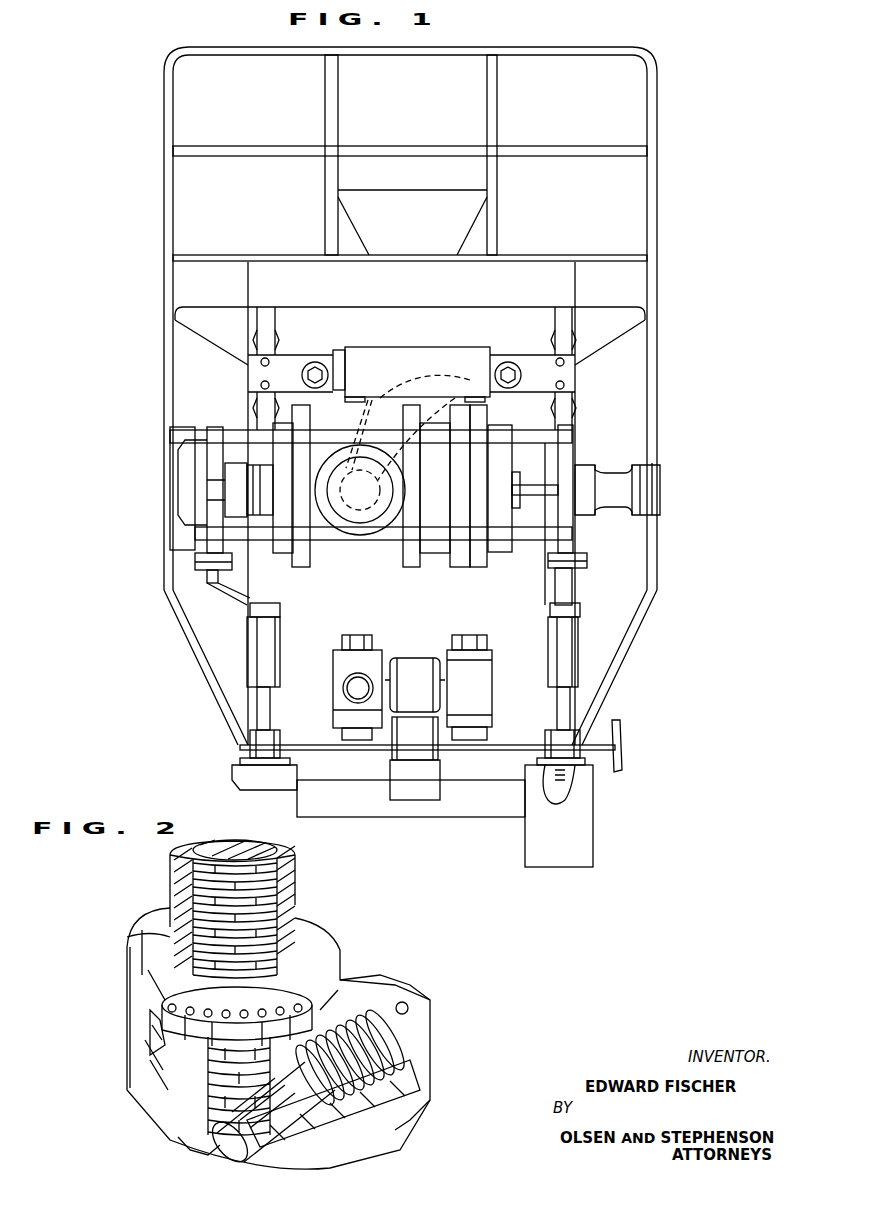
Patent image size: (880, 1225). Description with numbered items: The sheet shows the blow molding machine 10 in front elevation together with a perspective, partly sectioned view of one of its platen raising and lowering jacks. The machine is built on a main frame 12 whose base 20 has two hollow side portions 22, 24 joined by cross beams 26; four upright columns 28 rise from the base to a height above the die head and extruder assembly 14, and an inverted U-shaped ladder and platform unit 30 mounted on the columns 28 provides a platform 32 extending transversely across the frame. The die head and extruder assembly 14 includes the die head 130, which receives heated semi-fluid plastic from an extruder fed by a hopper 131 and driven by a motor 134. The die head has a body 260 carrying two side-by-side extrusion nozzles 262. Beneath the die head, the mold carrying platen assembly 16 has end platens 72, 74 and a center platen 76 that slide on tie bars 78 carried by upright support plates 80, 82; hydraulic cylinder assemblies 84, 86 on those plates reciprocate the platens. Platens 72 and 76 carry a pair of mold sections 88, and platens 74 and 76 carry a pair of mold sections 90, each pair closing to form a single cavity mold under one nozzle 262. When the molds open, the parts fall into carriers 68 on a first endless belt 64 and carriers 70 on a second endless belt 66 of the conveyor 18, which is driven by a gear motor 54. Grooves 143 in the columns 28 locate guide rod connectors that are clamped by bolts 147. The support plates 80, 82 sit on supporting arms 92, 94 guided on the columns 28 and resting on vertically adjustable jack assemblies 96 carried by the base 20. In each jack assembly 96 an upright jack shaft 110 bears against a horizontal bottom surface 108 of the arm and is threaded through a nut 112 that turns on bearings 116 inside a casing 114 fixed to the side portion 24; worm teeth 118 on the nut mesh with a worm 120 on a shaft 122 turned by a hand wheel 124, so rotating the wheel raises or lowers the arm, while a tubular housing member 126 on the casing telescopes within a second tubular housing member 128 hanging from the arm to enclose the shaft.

In FIG. 1, the blow molding machine 10 is at (684, 349).
In FIG. 1, the main frame 12 is at (587, 409).
In FIG. 1, the die head and extruder assembly 14 is at (480, 350).
In FIG. 1, the mold carrying platen assembly 16 is at (449, 564).
In FIG. 1, the conveyor 18 is at (503, 635).
In FIG. 1, the base 20 is at (605, 829).
In FIG. 1, the hollow side portion 22 is at (272, 786).
In FIG. 1, the hollow side portion 24 is at (586, 801).
In FIG. 1, the cross beams 26 is at (463, 806).
In FIG. 1, the upright columns 28 is at (282, 597).
In FIG. 1, the ladder and platform unit 30 is at (656, 197).
In FIG. 1, the platform 32 is at (511, 258).
In FIG. 1, the gear motor 54 is at (418, 657).
In FIG. 1, the first endless belt 64 is at (334, 711).
In FIG. 1, the second endless belt 66 is at (480, 685).
In FIG. 1, the carriers 68 is at (356, 634).
In FIG. 1, the carriers 70 is at (479, 634).
In FIG. 1, the end platen 72 is at (285, 548).
In FIG. 1, the end platen 74 is at (498, 555).
In FIG. 1, the center platen 76 is at (432, 570).
In FIG. 1, the tie bars 78 is at (521, 436).
In FIG. 1, the upright support plate 80 is at (213, 426).
In FIG. 1, the upright support plate 82 is at (566, 441).
In FIG. 1, the hydraulic cylinder assembly 84 is at (246, 500).
In FIG. 1, the hydraulic cylinder assembly 86 is at (612, 486).
In FIG. 1, the mold sections 88 is at (304, 422).
In FIG. 1, the mold sections 90 is at (463, 481).
In FIG. 1, the supporting arm 92 is at (240, 590).
In FIG. 1, the supporting arm 94 is at (561, 593).
In FIG. 1, the jack assembly 96 is at (265, 675).
In FIG. 2, the jack assembly 96 is at (351, 909).
In FIG. 1, the horizontal bottom surface 108 is at (273, 626).
In FIG. 2, the jack shaft 110 is at (212, 842).
In FIG. 2, the nut 112 is at (140, 1036).
In FIG. 1, the casing 114 is at (556, 743).
In FIG. 2, the casing 114 is at (336, 970).
In FIG. 2, the bearings 116 is at (165, 1010).
In FIG. 2, the worm teeth 118 is at (158, 1070).
In FIG. 2, the worm 120 is at (382, 1005).
In FIG. 1, the shaft 122 is at (486, 751).
In FIG. 2, the shaft 122 is at (247, 1158).
In FIG. 1, the hand wheel 124 is at (620, 723).
In FIG. 2, the tubular housing member 126 is at (290, 900).
In FIG. 1, the second tubular housing member 128 is at (565, 673).
In FIG. 1, the die head 130 is at (355, 348).
In FIG. 1, the hopper 131 is at (405, 205).
In FIG. 1, the motor 134 is at (342, 522).
In FIG. 1, the grooves 143 is at (258, 346).
In FIG. 1, the bolts 147 is at (270, 361).
In FIG. 1, the body 260 is at (432, 362).
In FIG. 1, the extrusion nozzles 262 is at (355, 392).